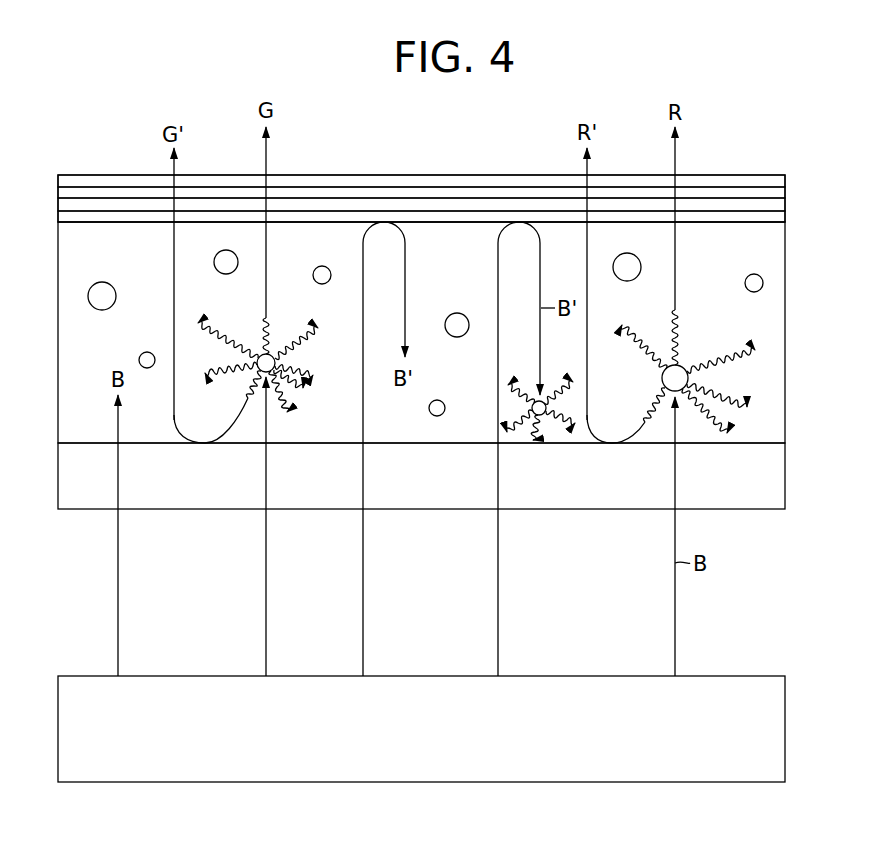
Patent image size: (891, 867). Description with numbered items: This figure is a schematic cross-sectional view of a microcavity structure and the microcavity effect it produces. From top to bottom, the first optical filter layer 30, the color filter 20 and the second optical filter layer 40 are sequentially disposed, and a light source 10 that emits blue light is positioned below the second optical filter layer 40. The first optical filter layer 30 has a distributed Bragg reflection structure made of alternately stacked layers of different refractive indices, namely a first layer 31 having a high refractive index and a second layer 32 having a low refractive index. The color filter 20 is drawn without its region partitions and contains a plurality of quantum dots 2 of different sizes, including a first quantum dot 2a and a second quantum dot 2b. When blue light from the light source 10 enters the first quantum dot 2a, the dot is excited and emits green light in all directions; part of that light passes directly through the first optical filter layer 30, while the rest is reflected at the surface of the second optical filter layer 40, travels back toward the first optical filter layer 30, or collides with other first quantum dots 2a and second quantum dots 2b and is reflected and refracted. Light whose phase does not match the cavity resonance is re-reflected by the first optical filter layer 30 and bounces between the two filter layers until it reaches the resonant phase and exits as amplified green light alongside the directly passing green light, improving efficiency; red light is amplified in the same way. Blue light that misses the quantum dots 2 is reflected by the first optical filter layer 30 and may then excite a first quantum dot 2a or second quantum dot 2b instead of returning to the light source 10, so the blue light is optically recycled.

The light source 10 is at (785, 727).
The color filter 20 is at (785, 375).
The first optical filter layer 30 is at (843, 160).
The first layer 31 is at (785, 193).
The second layer 32 is at (785, 181).
The second optical filter layer 40 is at (785, 470).
The quantum dots 2 is at (631, 454).
The first quantum dot 2a is at (545, 414).
The second quantum dot 2b is at (672, 385).